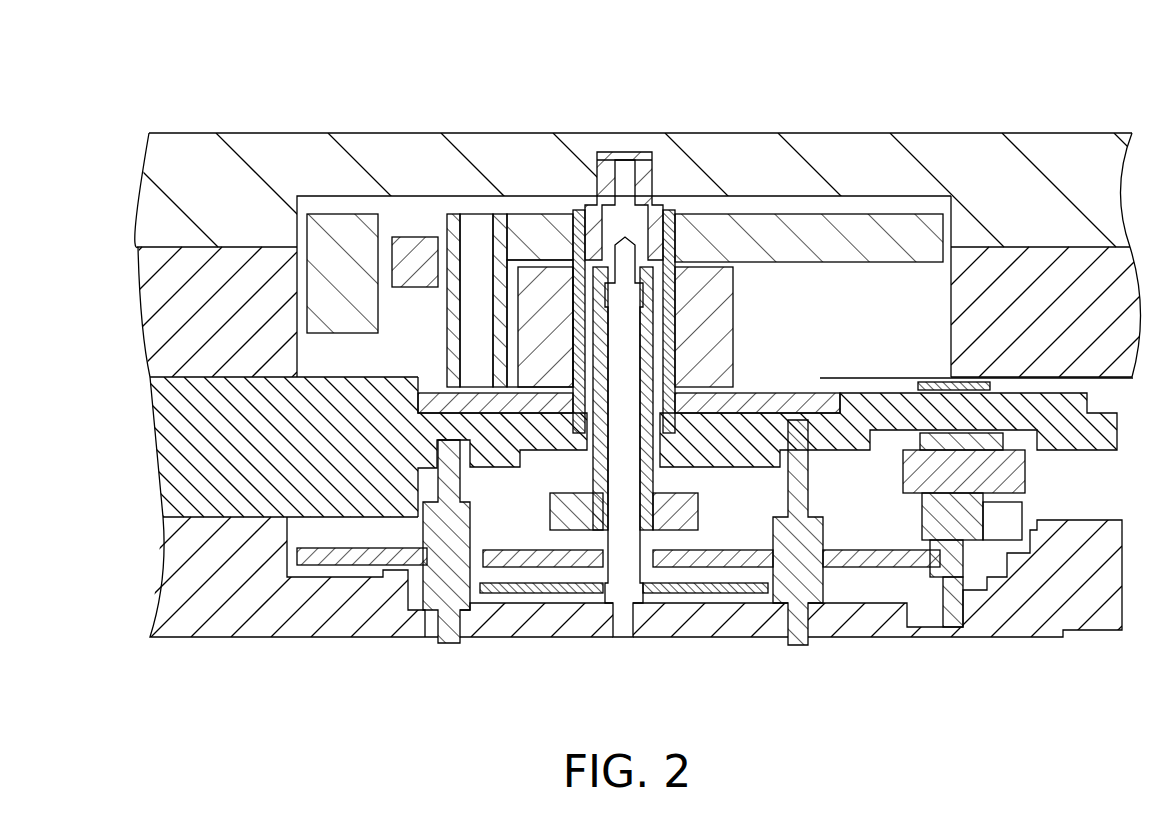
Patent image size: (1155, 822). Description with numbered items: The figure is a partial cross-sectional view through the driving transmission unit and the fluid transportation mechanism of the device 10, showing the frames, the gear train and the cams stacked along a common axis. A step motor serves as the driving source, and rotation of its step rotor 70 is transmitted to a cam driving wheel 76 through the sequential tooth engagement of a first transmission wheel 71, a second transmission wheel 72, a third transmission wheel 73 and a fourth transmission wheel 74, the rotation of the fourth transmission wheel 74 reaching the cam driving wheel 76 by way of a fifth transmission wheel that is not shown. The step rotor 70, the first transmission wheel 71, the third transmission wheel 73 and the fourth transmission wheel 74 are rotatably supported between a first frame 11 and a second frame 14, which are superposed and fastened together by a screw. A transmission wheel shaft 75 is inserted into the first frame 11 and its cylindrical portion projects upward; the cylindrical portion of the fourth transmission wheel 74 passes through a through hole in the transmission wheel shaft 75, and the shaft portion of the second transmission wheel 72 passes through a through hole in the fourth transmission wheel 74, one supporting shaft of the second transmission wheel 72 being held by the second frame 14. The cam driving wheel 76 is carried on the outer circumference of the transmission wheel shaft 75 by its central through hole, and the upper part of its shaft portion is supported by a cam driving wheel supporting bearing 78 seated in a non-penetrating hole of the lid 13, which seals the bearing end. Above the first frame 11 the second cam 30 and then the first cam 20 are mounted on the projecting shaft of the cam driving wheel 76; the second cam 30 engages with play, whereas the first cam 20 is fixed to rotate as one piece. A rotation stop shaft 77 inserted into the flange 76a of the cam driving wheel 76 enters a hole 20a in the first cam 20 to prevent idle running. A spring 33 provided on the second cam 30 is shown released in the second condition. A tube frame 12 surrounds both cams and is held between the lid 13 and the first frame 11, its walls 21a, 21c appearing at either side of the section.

The fluid control valve 10 is at (828, 69).
The first frame 11 is at (160, 427).
The tube frame 12 is at (150, 306).
The lid 13 is at (146, 197).
The second frame 14 is at (166, 564).
The first cam 20 is at (348, 225).
The hole 20a is at (492, 240).
The case left wall 21a is at (297, 238).
The case right wall 21c is at (953, 240).
The second cam 30 is at (727, 278).
The spring 33 is at (410, 250).
The step rotor 70 is at (927, 527).
The first transmission wheel 71 is at (797, 588).
The second transmission wheel 72 is at (623, 578).
The third transmission wheel 73 is at (447, 600).
The fourth transmission wheel 74 is at (573, 518).
The transmission wheel shaft 75 is at (745, 392).
The cam driving wheel 76 is at (667, 208).
The flange 76a is at (790, 388).
The rotation stop shaft 77 is at (473, 277).
The cam driving wheel supporting bearing 78 is at (612, 154).